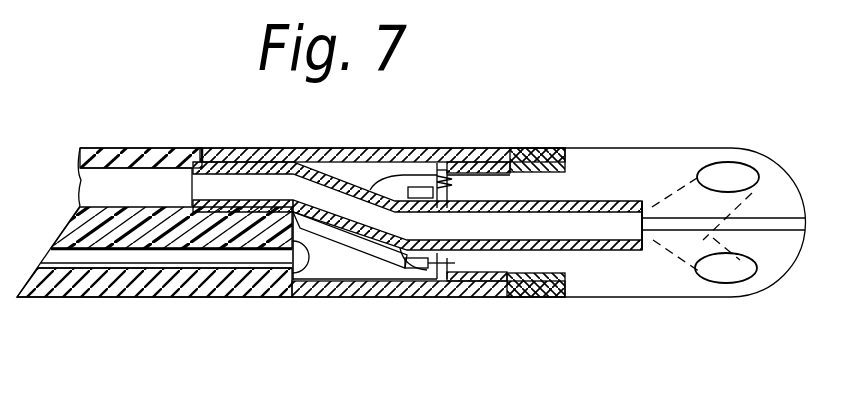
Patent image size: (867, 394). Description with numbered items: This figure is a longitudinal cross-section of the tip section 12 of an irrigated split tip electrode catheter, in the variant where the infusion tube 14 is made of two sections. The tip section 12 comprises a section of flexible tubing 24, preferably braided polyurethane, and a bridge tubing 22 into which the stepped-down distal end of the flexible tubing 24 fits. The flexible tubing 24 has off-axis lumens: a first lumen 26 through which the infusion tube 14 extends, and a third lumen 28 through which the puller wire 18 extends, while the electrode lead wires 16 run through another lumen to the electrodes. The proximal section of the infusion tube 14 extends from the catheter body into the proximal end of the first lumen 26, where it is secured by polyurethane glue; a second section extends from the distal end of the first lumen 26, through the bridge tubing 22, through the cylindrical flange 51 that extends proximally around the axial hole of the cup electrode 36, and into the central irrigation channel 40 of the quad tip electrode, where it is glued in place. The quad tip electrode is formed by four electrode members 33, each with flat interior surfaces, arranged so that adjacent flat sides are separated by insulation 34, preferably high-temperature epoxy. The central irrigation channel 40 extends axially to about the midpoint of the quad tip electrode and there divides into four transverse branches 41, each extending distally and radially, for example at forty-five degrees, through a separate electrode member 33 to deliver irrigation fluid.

The tip section 12 is at (135, 300).
The infusion tube 14 is at (333, 175).
The electrode lead wires 16 is at (347, 255).
The puller wire 18 is at (180, 258).
The bridge tubing 22 is at (357, 150).
The flexible tubing 24 is at (137, 158).
The first lumen 26 is at (88, 180).
The third lumen 28 is at (68, 258).
The electrode members 33 is at (760, 204).
The insulation 34 is at (777, 227).
The cup electrode 36 is at (535, 297).
The central irrigation channel 40 is at (650, 240).
The transverse branches 41 is at (686, 194).
The cylindrical flange 51 is at (407, 266).